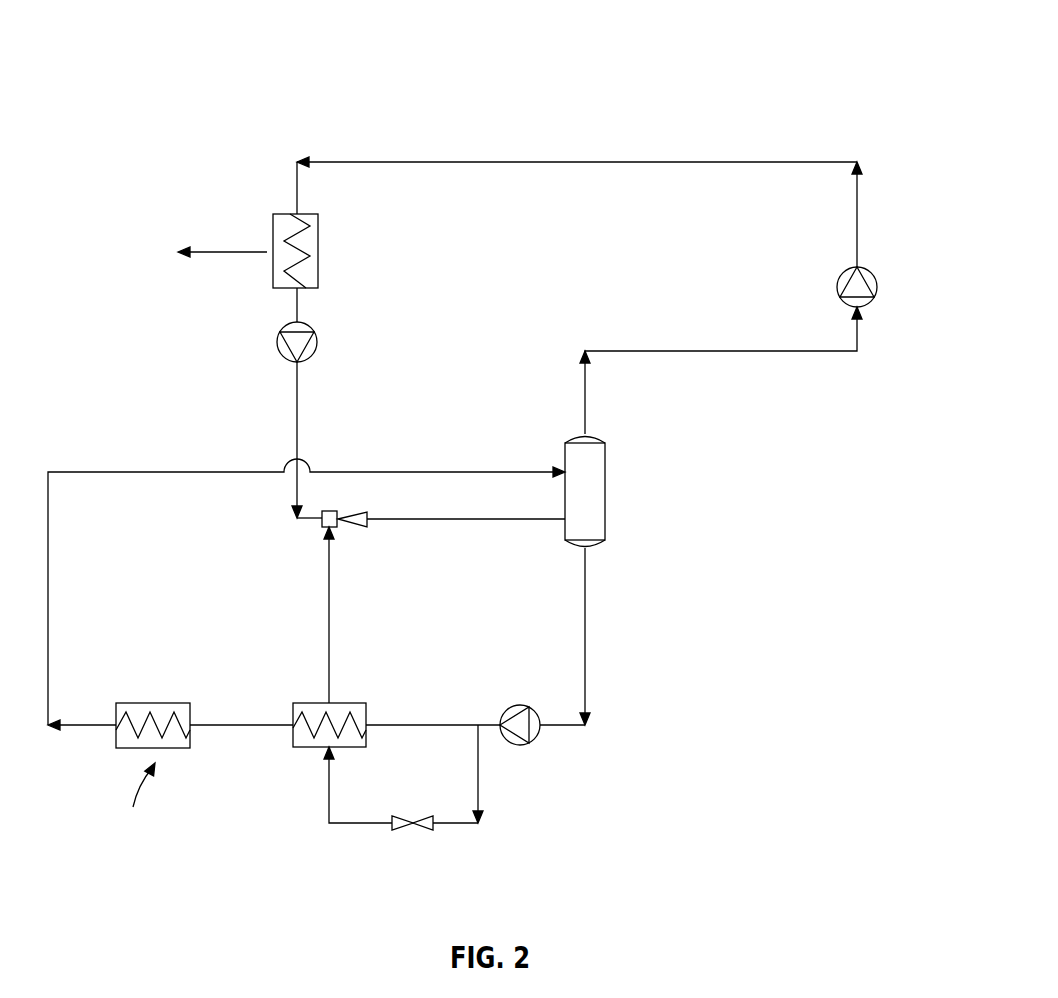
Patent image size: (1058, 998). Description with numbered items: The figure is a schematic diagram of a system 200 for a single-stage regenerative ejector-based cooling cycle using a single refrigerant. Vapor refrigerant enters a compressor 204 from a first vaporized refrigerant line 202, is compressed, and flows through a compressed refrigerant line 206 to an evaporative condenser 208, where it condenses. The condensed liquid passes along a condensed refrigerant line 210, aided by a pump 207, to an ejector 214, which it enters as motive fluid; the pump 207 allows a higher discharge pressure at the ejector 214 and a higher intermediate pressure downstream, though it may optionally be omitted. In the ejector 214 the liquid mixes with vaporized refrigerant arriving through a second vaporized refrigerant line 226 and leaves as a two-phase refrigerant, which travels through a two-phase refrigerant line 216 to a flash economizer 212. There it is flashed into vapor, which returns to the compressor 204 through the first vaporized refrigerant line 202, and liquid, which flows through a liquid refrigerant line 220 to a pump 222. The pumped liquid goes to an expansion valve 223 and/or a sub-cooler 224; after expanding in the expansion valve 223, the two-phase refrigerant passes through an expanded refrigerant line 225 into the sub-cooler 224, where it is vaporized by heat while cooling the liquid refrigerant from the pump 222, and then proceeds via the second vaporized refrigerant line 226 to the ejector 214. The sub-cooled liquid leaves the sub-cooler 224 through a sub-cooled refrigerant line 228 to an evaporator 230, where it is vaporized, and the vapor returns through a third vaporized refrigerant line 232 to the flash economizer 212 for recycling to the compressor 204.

The system 200 is at (810, 55).
The first vaporized refrigerant line 202 is at (857, 343).
The compressor 204 is at (870, 272).
The compressed refrigerant line 206 is at (857, 213).
The pump 207 is at (315, 332).
The evaporative condenser 208 is at (273, 277).
The condensed refrigerant line 210 is at (297, 398).
The flash economizer 212 is at (605, 490).
The ejector 214 is at (329, 511).
The two-phase refrigerant line 216 is at (463, 518).
The liquid refrigerant line 220 is at (585, 647).
The pump 222 is at (533, 740).
The expansion valve 223 is at (418, 830).
The sub-cooler 224 is at (345, 703).
The expanded refrigerant line 225 is at (350, 823).
The second vaporized refrigerant line 226 is at (329, 613).
The sub-cooled refrigerant line 228 is at (240, 725).
The evaporator 230 is at (152, 703).
The third vaporized refrigerant line 232 is at (48, 600).